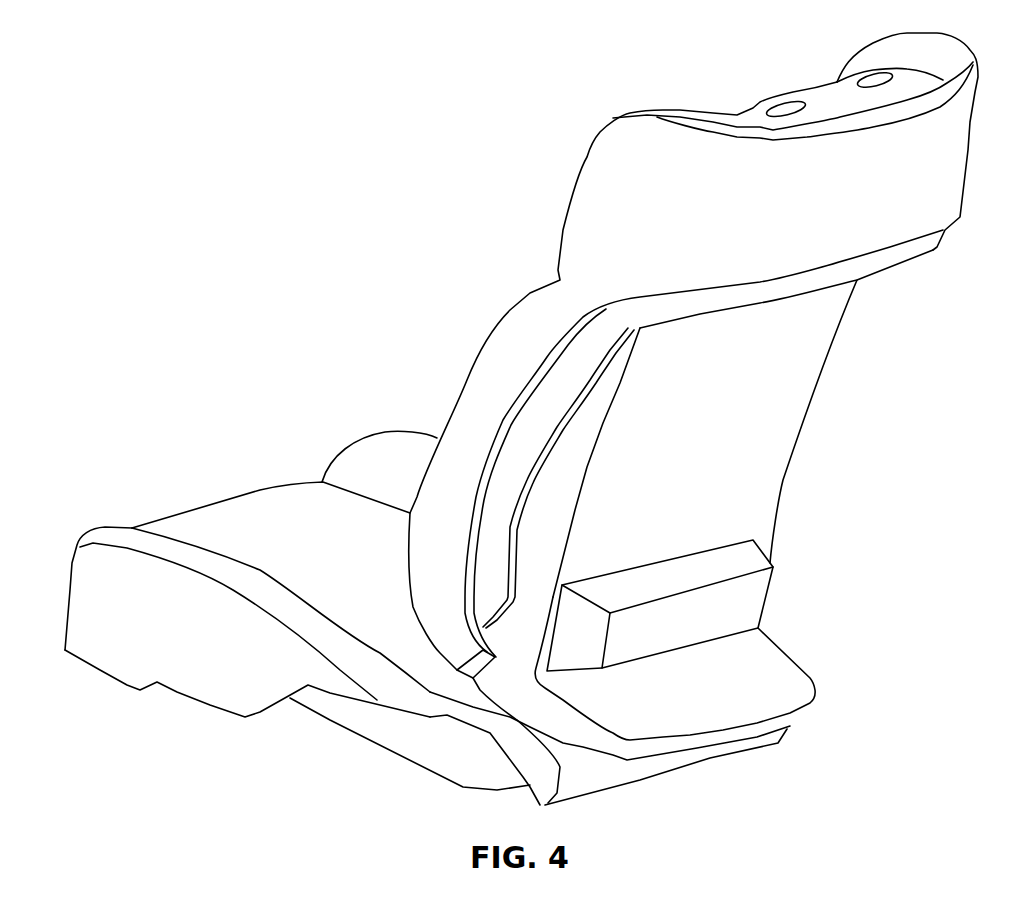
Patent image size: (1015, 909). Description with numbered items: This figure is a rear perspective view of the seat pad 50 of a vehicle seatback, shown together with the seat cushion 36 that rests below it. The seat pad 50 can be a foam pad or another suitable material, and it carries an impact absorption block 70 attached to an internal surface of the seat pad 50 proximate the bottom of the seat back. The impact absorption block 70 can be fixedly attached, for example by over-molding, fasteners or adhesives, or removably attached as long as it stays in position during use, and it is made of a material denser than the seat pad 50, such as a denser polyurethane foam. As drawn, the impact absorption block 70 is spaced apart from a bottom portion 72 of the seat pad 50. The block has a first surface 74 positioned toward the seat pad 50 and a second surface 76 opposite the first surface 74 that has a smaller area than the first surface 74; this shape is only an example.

The seat pad 50 is at (362, 262).
The seat cushion 36 is at (230, 498).
The impact absorption block 70 is at (706, 594).
The bottom portion 72 is at (817, 677).
The first surface 74 is at (700, 560).
The second surface 76 is at (748, 603).